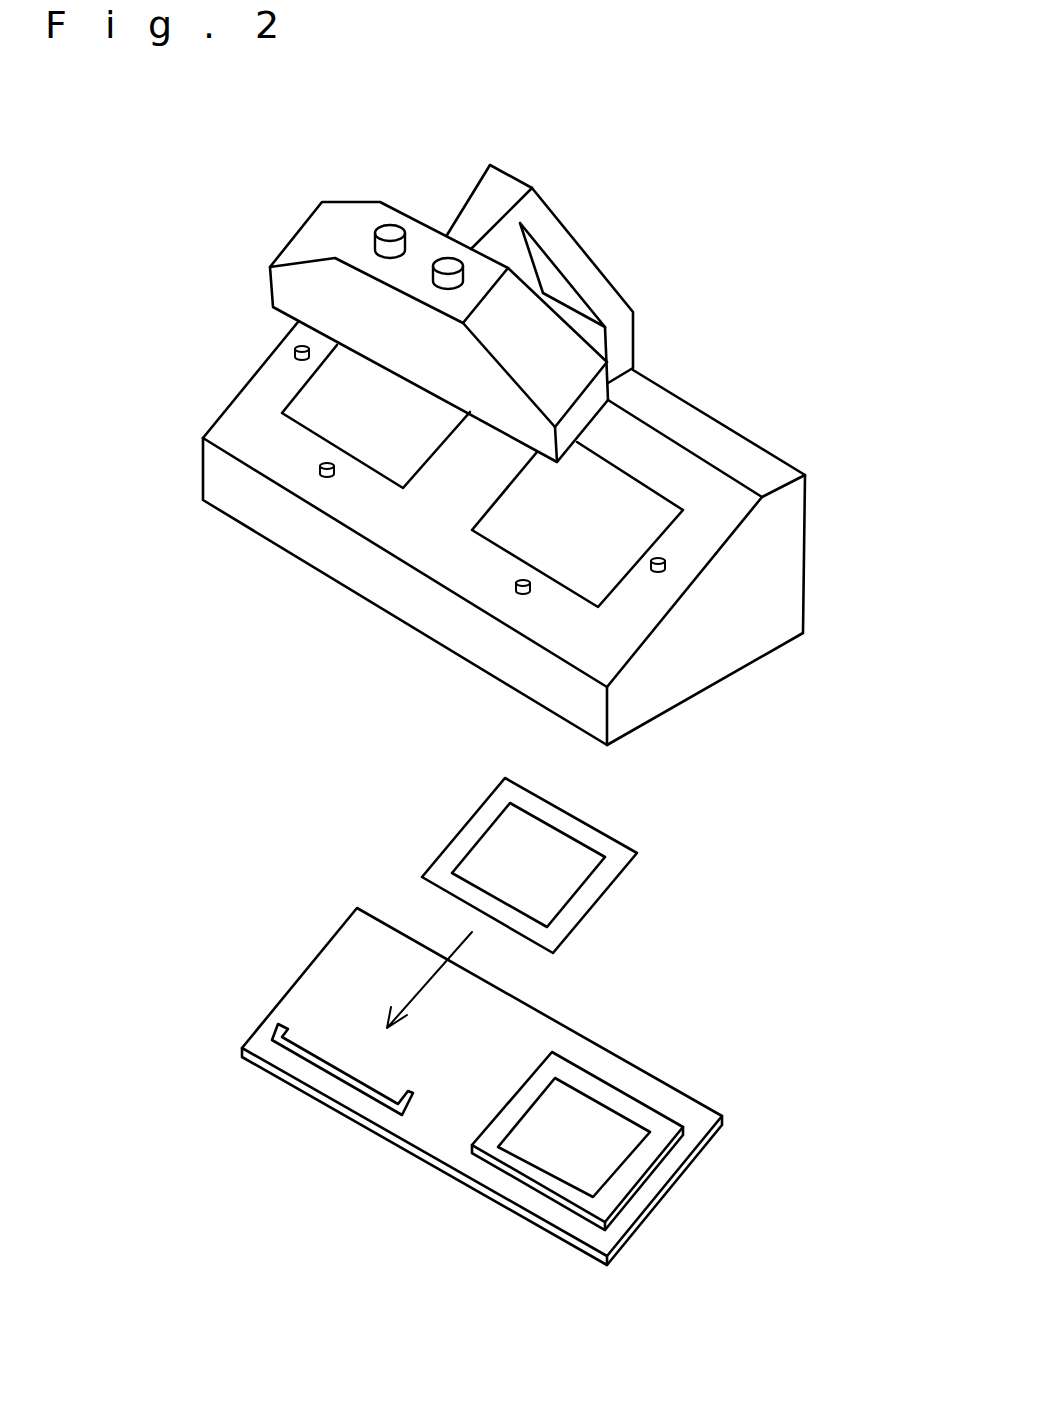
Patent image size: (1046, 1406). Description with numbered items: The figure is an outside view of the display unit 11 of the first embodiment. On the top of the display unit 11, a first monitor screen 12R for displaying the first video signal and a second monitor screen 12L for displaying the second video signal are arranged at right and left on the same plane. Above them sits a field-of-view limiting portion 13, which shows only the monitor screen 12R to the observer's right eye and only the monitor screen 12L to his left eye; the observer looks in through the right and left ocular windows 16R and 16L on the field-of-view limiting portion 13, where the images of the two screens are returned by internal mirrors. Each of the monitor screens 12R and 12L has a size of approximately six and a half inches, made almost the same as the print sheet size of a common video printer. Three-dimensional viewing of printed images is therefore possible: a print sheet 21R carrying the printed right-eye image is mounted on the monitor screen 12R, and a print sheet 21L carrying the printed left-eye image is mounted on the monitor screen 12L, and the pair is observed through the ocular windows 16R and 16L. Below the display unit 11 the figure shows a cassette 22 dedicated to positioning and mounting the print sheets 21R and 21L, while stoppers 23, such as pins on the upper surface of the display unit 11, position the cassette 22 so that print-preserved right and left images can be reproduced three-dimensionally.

The display unit 11 is at (700, 350).
The second monitor screen 12L is at (330, 415).
The first monitor screen 12R is at (603, 563).
The field-of-view limiting portion 13 is at (283, 290).
The left ocular window 16L is at (388, 232).
The right ocular window 16R is at (446, 262).
The print sheet 21L is at (603, 883).
The print sheet 21R is at (613, 1098).
The cassette 22 is at (433, 1135).
The stopper 23 is at (323, 478).